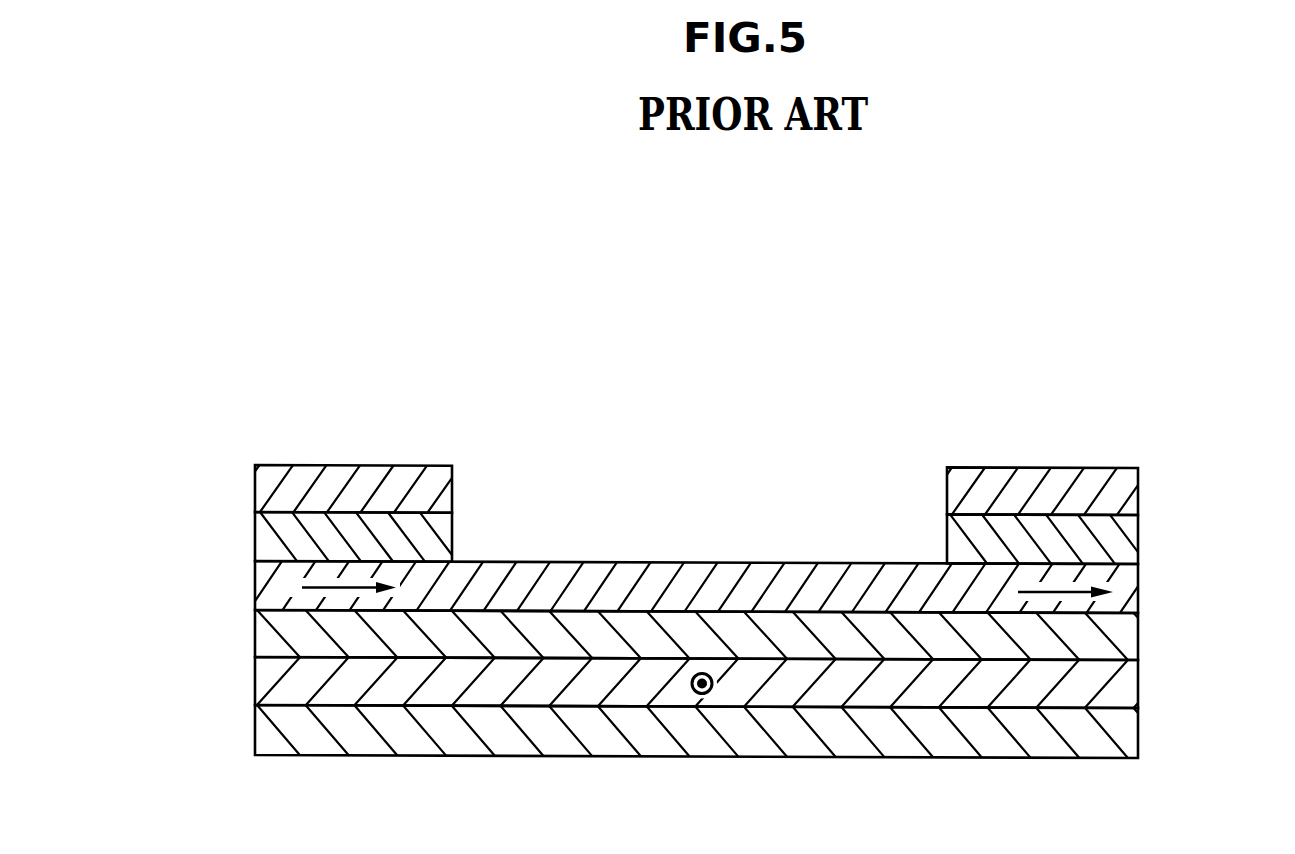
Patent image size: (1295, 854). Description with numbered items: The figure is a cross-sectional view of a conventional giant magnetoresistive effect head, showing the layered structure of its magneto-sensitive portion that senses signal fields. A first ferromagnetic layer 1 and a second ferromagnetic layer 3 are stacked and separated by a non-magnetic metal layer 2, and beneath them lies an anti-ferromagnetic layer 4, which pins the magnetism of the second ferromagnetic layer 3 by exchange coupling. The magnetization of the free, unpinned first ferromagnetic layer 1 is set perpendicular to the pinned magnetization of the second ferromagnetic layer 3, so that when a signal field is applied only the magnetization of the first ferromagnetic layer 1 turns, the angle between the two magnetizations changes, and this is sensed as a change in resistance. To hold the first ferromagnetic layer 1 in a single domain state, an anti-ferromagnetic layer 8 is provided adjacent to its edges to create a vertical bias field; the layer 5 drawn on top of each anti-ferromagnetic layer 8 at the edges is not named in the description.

The first ferromagnetic layer 1 is at (1138, 588).
The non-magnetic metal layer 2 is at (1138, 633).
The second ferromagnetic layer 3 is at (1138, 682).
The anti-ferromagnetic layer 4 is at (1138, 742).
The electrode 5 is at (357, 472).
The anti-ferromagnetic layer 8 is at (265, 540).